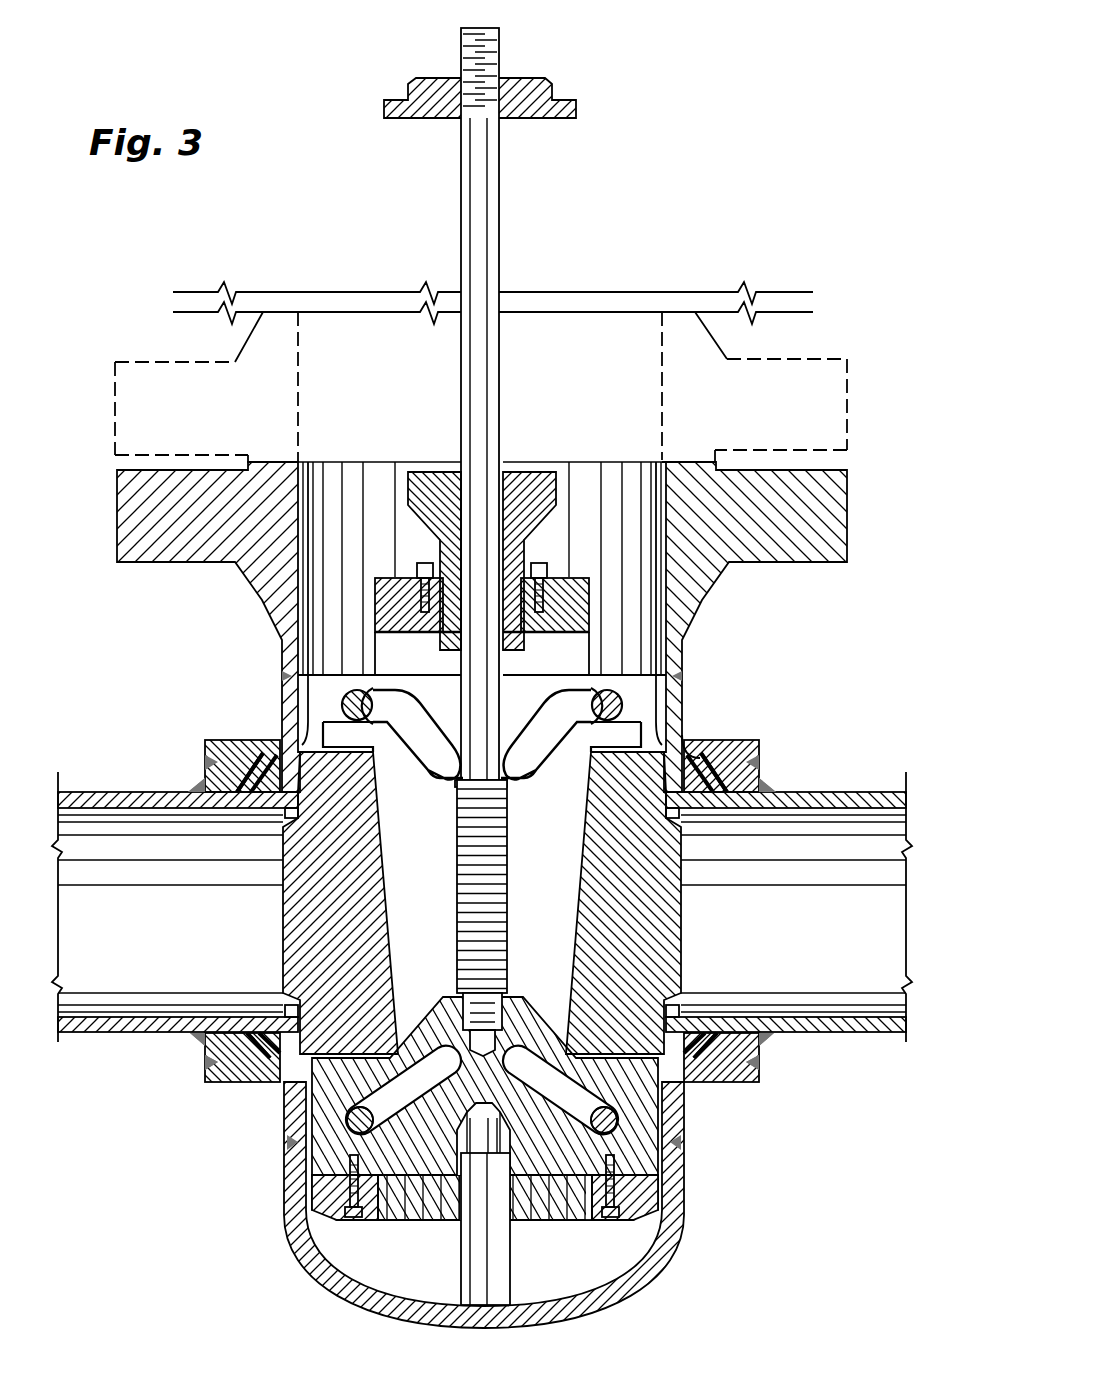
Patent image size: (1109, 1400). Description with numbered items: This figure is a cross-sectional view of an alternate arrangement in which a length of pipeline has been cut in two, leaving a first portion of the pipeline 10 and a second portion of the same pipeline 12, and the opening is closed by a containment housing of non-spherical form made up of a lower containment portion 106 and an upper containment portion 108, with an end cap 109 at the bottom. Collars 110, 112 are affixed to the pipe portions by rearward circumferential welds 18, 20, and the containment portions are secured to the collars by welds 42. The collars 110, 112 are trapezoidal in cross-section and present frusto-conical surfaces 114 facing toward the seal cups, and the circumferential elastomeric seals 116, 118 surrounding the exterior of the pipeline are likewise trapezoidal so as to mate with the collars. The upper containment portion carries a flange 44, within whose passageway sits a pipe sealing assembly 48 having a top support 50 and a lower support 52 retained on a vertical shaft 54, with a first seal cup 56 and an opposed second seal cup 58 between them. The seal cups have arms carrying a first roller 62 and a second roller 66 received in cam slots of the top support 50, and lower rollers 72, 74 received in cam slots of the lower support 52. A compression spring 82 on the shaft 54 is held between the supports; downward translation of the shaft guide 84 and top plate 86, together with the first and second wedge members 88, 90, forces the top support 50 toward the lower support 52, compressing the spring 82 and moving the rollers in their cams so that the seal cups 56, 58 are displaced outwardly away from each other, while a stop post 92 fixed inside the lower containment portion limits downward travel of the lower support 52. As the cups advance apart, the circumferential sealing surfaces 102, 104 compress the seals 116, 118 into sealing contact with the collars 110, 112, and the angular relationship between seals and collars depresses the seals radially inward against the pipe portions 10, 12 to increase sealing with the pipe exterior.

The portion of the pipeline 10 is at (105, 790).
The portion of the same pipeline 12 is at (878, 785).
The circumferential weld 18 is at (195, 783).
The circumferential weld 20 is at (770, 785).
The welds 42 is at (210, 750).
The flange 44 is at (128, 566).
The pipe sealing assembly 48 is at (703, 698).
The top support 50 is at (525, 690).
The lower support 52 is at (650, 1170).
The vertical shaft 54 is at (481, 183).
The first seal cup 56 is at (310, 906).
The second seal cup 58 is at (655, 906).
The first roller 62 is at (345, 697).
The second roller 66 is at (612, 705).
The roller 72 is at (345, 1138).
The roller 74 is at (640, 1152).
The compression spring 82 is at (458, 912).
The shaft guide 84 is at (545, 485).
The top plate 86 is at (567, 580).
The first wedge member 88 is at (429, 874).
The second wedge member 90 is at (550, 874).
The stop post 92 is at (487, 1228).
The circumferential sealing surface 102 is at (258, 770).
The circumferential sealing surface 104 is at (704, 770).
The lower containment portion 106 is at (690, 1110).
The upper containment portion 108 is at (700, 735).
The end cap 109 is at (602, 1312).
The collar 110 is at (203, 1062).
The collar 112 is at (755, 1057).
The frusto-conical surface 114 is at (268, 1048).
The circumferential elastomeric seal 116 is at (252, 1040).
The circumferential elastomeric seal 118 is at (705, 1045).